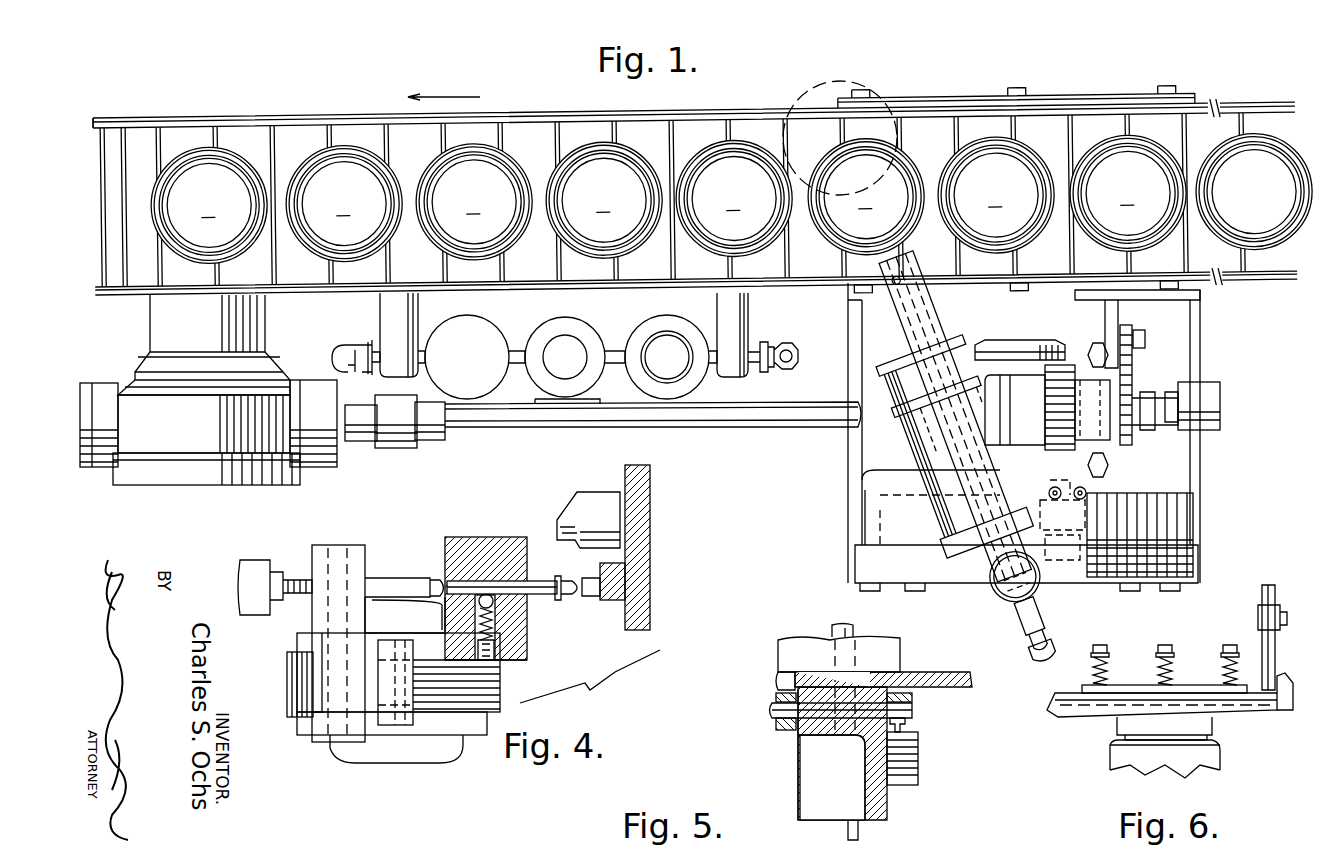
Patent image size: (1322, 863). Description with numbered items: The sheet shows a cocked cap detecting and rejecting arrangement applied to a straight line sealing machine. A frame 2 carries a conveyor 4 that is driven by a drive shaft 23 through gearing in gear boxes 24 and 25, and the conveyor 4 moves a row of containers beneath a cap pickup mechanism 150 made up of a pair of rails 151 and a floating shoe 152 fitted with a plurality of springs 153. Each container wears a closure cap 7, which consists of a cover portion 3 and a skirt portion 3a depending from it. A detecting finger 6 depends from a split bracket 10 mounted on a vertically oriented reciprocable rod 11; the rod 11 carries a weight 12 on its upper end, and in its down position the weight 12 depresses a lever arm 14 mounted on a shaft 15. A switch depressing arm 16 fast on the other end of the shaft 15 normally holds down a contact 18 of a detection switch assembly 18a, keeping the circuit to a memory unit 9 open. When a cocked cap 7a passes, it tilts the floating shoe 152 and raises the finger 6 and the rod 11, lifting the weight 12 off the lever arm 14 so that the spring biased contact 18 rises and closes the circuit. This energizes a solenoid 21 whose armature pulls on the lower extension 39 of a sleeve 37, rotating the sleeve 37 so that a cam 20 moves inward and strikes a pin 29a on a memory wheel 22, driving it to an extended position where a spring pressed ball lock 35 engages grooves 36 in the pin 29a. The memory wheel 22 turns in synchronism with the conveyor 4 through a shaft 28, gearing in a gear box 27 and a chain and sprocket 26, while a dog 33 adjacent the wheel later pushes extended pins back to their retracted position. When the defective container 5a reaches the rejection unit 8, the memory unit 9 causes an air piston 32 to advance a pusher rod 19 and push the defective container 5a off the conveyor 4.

In FIG. 1, the frame 2 is at (575, 110).
In FIG. 1, the cover portion 3 is at (732, 198).
In FIG. 6, the skirt portion 3a is at (1205, 740).
In FIG. 1, the conveyor 4 is at (530, 150).
In FIG. 1, the defective container 5a is at (836, 96).
In FIG. 6, the defective container 5a is at (1110, 762).
In FIG. 6, the detecting finger 6 is at (1275, 655).
In FIG. 1, the closure cap 7 is at (262, 168).
In FIG. 1, the cocked cap 7a is at (890, 170).
In FIG. 1, the rejection unit 8 is at (868, 348).
In FIG. 1, the memory unit 9 is at (1224, 381).
In FIG. 6, the split bracket 10 is at (1278, 618).
In FIG. 5, the reciprocable rod 11 is at (862, 834).
In FIG. 5, the weight 12 is at (900, 647).
In FIG. 5, the lever arm 14 is at (775, 680).
In FIG. 5, the shaft 15 is at (772, 712).
In FIG. 5, the switch depressing arm 16 is at (915, 717).
In FIG. 5, the contact 18 is at (905, 728).
In FIG. 5, the detection switch assembly 18a is at (920, 770).
In FIG. 1, the pusher rod 19 is at (935, 318).
In FIG. 4, the cam 20 is at (412, 578).
In FIG. 4, the solenoid 21 is at (438, 728).
In FIG. 4, the memory wheel 22 is at (527, 655).
In FIG. 1, the drive shaft 23 is at (735, 428).
In FIG. 1, the gear box 24 is at (318, 463).
In FIG. 1, the gear box 25 is at (260, 485).
In FIG. 1, the chain and sprocket 26 is at (1125, 450).
In FIG. 1, the gear box 27 is at (1062, 348).
In FIG. 1, the shaft 28 is at (1072, 510).
In FIG. 4, the pin 29a is at (568, 598).
In FIG. 1, the air piston 32 is at (1002, 600).
In FIG. 4, the dog 33 is at (610, 524).
In FIG. 4, the spring pressed ball lock 35 is at (497, 614).
In FIG. 4, the grooves 36 is at (490, 560).
In FIG. 4, the sleeve 37 is at (348, 586).
In FIG. 4, the lower extension 39 is at (393, 679).
In FIG. 6, the cap pickup mechanism 150 is at (1288, 720).
In FIG. 6, the rails 151 is at (1100, 710).
In FIG. 6, the floating shoe 152 is at (1235, 717).
In FIG. 6, the springs 153 is at (1225, 658).